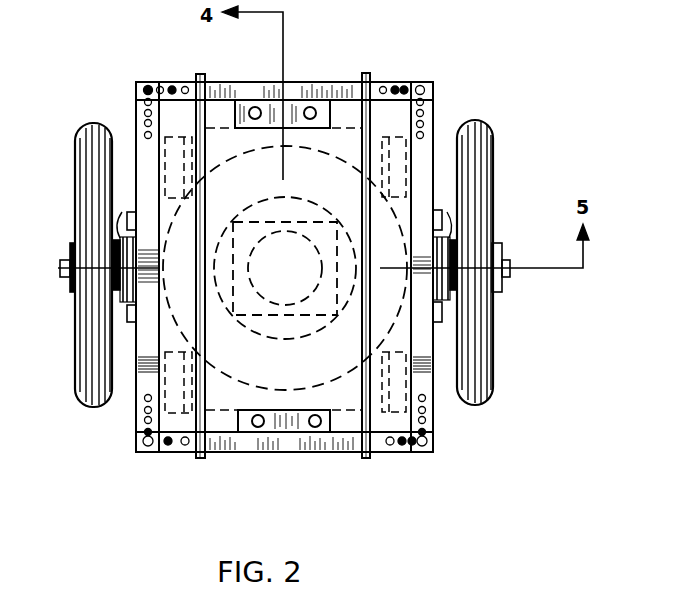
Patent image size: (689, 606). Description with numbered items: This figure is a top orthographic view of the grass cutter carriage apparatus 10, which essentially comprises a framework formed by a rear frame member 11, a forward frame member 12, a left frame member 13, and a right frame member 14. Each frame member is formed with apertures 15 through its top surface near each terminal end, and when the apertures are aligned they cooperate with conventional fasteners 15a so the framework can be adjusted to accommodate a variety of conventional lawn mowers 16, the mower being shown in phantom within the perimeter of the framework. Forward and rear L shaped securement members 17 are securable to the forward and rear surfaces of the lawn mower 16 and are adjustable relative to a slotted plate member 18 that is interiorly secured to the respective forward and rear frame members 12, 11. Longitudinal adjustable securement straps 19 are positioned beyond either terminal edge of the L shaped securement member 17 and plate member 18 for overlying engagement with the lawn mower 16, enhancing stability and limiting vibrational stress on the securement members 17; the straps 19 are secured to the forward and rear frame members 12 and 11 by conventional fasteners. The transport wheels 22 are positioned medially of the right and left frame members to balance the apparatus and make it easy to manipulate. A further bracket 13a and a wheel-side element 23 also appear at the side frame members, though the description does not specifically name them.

The grass cutter carriage apparatus 10 is at (512, 62).
The rear frame member 11 is at (229, 80).
The forward frame member 12 is at (384, 453).
The left frame member 13 is at (434, 158).
The mounting bracket 13a is at (390, 393).
The right frame member 14 is at (134, 382).
The apertures 15 is at (150, 96).
The conventional fasteners 15a is at (182, 98).
The lawn mower 16 is at (318, 193).
The L shaped securement member 17 is at (293, 128).
The slotted plate member 18 is at (298, 82).
The longitudinal adjustable securement straps 19 is at (208, 402).
The transport wheels 22 is at (75, 153).
The wheel mounting bracket 23 is at (286, 252).